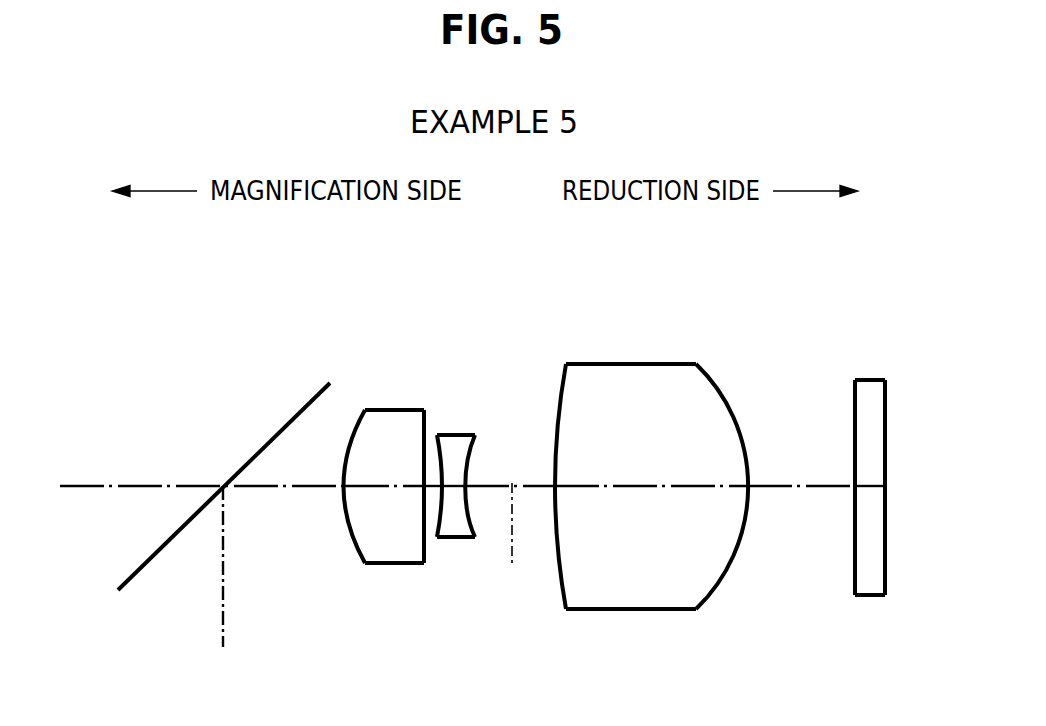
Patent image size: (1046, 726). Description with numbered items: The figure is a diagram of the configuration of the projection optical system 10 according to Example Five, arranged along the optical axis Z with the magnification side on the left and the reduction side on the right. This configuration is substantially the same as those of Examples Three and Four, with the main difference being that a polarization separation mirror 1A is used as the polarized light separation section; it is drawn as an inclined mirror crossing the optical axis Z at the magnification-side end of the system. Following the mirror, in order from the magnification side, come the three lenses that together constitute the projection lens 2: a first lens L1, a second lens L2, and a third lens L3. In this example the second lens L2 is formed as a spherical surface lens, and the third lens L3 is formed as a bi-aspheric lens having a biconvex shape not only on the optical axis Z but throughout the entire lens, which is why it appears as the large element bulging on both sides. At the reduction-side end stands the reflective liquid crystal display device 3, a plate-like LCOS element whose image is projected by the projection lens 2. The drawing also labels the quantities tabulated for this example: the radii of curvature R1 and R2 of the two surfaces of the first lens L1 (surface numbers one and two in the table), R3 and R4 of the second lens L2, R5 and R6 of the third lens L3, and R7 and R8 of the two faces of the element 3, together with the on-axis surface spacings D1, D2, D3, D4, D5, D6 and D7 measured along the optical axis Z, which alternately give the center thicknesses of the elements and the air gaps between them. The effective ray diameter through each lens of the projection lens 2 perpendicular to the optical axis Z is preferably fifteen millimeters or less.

The projection optical system 10 is at (202, 286).
The polarization separation mirror 1A is at (240, 470).
The projection lens 2 is at (790, 284).
The reflective liquid crystal display device 3 is at (873, 449).
The first lens L1 is at (375, 449).
The second lens L2 is at (478, 440).
The third lens L3 is at (655, 447).
The radius of curvature of lens surface R1 is at (343, 467).
The radius of curvature of lens surface R2 is at (424, 410).
The radius of curvature of lens surface R3 is at (440, 476).
The radius of curvature of lens surface R4 is at (470, 462).
The radius of curvature of lens surface R5 is at (555, 486).
The radius of curvature of lens surface R6 is at (748, 486).
The radius of curvature of lens surface R7 is at (855, 430).
The radius of curvature of lens surface R8 is at (885, 435).
The on-axis surface spacing D1 is at (395, 493).
The on-axis surface spacing D2 is at (432, 477).
The on-axis surface spacing D3 is at (453, 492).
The on-axis surface spacing D4 is at (547, 492).
The on-axis surface spacing D5 is at (693, 492).
The on-axis surface spacing D6 is at (830, 490).
The on-axis surface spacing D7 is at (870, 490).
The optical axis Z is at (512, 538).